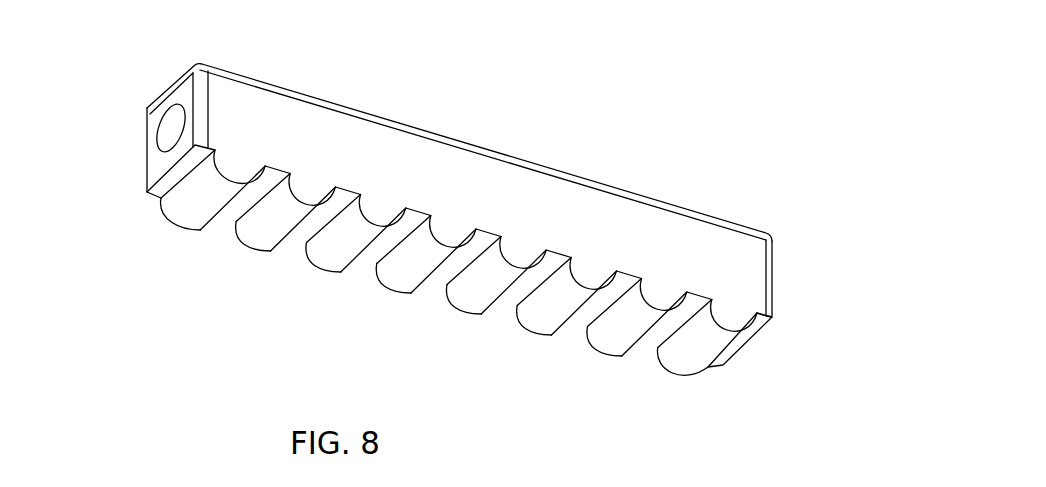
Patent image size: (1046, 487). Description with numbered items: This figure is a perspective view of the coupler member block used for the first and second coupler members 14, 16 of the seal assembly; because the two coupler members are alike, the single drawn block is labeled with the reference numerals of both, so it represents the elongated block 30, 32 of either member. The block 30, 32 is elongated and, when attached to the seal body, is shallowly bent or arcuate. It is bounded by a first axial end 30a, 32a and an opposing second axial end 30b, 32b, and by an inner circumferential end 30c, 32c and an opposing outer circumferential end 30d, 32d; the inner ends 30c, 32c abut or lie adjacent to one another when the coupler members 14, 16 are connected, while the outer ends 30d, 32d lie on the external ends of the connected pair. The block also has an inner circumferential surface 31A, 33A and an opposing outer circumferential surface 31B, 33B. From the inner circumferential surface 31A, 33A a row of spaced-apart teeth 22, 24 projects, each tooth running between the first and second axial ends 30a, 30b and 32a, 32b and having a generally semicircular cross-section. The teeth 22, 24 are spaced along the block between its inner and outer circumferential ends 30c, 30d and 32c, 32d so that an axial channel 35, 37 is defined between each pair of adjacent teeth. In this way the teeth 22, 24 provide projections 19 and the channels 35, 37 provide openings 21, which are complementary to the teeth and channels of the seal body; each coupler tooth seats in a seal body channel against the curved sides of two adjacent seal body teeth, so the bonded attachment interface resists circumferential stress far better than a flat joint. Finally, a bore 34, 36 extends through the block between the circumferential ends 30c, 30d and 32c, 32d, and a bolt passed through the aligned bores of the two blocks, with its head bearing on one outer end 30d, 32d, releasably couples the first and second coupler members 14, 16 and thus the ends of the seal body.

The first coupler member 14 is at (480, 217).
The second coupler member 16 is at (419, 52).
The projections 19 is at (190, 209).
The openings 21 is at (228, 215).
The teeth of the first coupler member 22 is at (434, 308).
The teeth of the second coupler member 24 is at (259, 236).
The elongated block of the first coupler member 30 is at (480, 246).
The elongated block of the second coupler member 32 is at (548, 165).
The first axial end of the first block 30a is at (485, 231).
The first axial end of the second block 32a is at (615, 208).
The second axial end of the first block 30b is at (477, 286).
The second axial end of the second block 32b is at (668, 235).
The inner circumferential end of the first block 30c is at (128, 134).
The inner circumferential end of the second block 32c is at (157, 163).
The outer circumferential end of the first block 30d is at (835, 278).
The outer circumferential end of the second block 32d is at (773, 278).
The inner circumferential surface of the first block 31A is at (459, 286).
The inner circumferential surface of the second block 33A is at (376, 246).
The outer circumferential surface of the first block 31B is at (459, 152).
The outer circumferential surface of the second block 33B is at (450, 134).
The bore of the first block 34 is at (122, 119).
The bore of the second block 36 is at (155, 116).
The channels of the first coupler member 35 is at (459, 271).
The channels of the second coupler member 37 is at (310, 222).